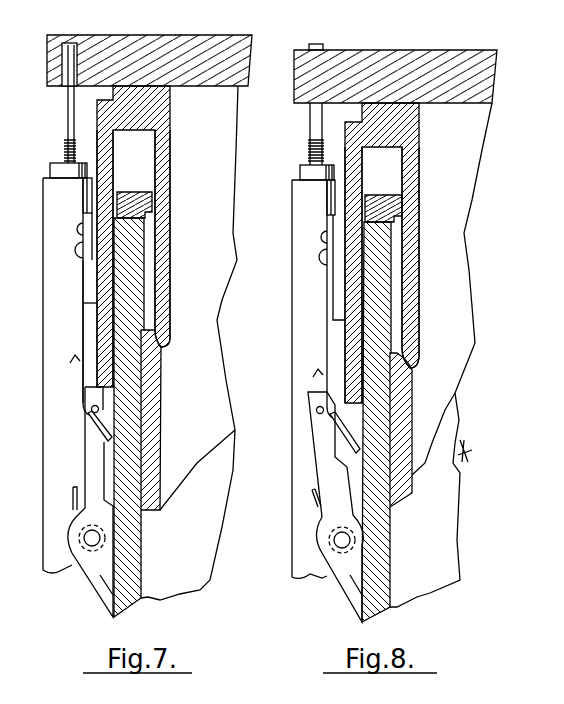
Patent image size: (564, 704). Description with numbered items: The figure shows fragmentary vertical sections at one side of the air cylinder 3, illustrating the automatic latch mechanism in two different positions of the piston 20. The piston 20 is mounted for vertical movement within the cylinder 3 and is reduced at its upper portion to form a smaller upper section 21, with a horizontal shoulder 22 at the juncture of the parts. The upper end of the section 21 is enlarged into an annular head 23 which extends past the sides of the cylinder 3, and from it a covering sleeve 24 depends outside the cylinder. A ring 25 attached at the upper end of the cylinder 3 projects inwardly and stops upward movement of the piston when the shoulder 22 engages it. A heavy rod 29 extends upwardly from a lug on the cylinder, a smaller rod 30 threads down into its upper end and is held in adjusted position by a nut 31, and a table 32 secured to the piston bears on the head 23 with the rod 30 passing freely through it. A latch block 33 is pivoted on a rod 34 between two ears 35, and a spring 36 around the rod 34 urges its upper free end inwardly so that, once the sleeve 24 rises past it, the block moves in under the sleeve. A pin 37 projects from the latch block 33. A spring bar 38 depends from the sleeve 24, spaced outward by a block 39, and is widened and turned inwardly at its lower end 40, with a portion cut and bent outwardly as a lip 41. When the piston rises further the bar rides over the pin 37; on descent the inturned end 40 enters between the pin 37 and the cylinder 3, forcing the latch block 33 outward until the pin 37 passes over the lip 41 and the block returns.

In FIG. 7, the cylinder 3 is at (141, 567).
In FIG. 8, the cylinder 3 is at (389, 543).
In FIG. 7, the piston 20 is at (158, 438).
In FIG. 8, the piston 20 is at (402, 424).
In FIG. 7, the upper section 21 is at (170, 275).
In FIG. 8, the upper section 21 is at (415, 298).
In FIG. 7, the horizontal shoulder 22 is at (152, 350).
In FIG. 8, the horizontal shoulder 22 is at (397, 355).
In FIG. 7, the annular head 23 is at (145, 107).
In FIG. 8, the annular head 23 is at (382, 113).
In FIG. 7, the covering sleeve 24 is at (113, 173).
In FIG. 8, the covering sleeve 24 is at (357, 173).
In FIG. 7, the ring 25 is at (147, 208).
In FIG. 8, the ring 25 is at (392, 203).
In FIG. 7, the rod 29 is at (55, 295).
In FIG. 8, the rod 29 is at (298, 240).
In FIG. 7, the small rod 30 is at (67, 112).
In FIG. 8, the small rod 30 is at (314, 117).
In FIG. 7, the nut 31 is at (83, 172).
In FIG. 8, the nut 31 is at (302, 172).
In FIG. 7, the table 32 is at (208, 48).
In FIG. 8, the table 32 is at (445, 63).
In FIG. 7, the latch block 33 is at (101, 492).
In FIG. 8, the latch block 33 is at (323, 469).
In FIG. 7, the rod 34 is at (92, 540).
In FIG. 8, the rod 34 is at (342, 543).
In FIG. 7, the ears 35 is at (99, 572).
In FIG. 8, the ears 35 is at (350, 574).
In FIG. 7, the spring 36 is at (73, 500).
In FIG. 8, the spring 36 is at (312, 503).
In FIG. 7, the pin 37 is at (91, 411).
In FIG. 8, the pin 37 is at (318, 410).
In FIG. 7, the spring bar 38 is at (82, 330).
In FIG. 8, the spring bar 38 is at (327, 333).
In FIG. 7, the block 39 is at (92, 260).
In FIG. 8, the block 39 is at (335, 278).
In FIG. 7, the inturned end 40 is at (88, 436).
In FIG. 8, the inturned end 40 is at (343, 446).
In FIG. 7, the outturned lip 41 is at (76, 360).
In FIG. 8, the outturned lip 41 is at (315, 375).